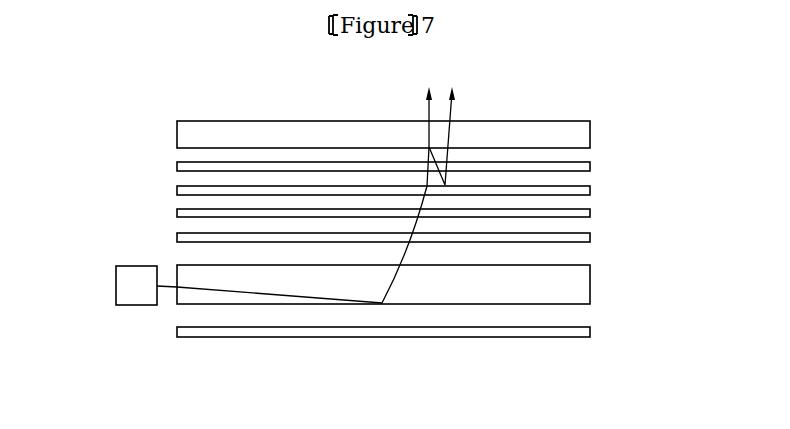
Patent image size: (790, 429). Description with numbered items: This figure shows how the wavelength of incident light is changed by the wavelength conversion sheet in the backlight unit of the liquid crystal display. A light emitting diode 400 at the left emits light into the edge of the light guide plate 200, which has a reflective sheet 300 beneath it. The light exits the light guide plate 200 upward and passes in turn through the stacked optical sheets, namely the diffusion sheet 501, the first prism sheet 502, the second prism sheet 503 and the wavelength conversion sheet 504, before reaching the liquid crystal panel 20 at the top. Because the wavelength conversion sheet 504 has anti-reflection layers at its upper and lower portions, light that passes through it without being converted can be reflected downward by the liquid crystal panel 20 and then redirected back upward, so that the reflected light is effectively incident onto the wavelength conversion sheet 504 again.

The liquid crystal panel 20 is at (588, 132).
The wavelength conversion sheet 504 is at (588, 166).
The second prism sheet 503 is at (588, 190).
The first prism sheet 502 is at (588, 213).
The diffusion sheet 501 is at (588, 237).
The light guide plate 200 is at (587, 283).
The reflective sheet 300 is at (587, 331).
The light emitting diode 400 is at (137, 270).